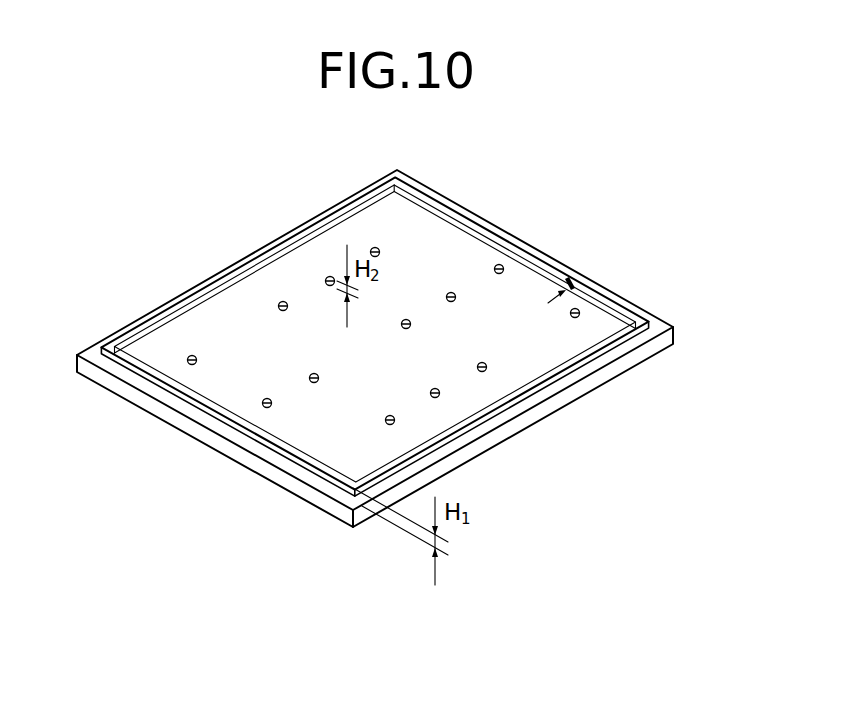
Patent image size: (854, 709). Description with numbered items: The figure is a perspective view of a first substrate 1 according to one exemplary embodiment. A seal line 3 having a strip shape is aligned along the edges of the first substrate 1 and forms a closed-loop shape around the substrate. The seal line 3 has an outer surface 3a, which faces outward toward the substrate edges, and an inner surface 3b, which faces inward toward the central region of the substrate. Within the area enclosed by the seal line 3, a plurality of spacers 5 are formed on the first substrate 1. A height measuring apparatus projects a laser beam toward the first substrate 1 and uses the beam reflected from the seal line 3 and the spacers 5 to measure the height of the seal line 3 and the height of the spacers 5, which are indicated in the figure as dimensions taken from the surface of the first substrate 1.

The first substrate 1 is at (643, 336).
The seal line 3 is at (374, 335).
The outer surface of the seal line 3a is at (198, 405).
The inner surface of the seal line 3b is at (184, 303).
The spacer 5 is at (518, 250).